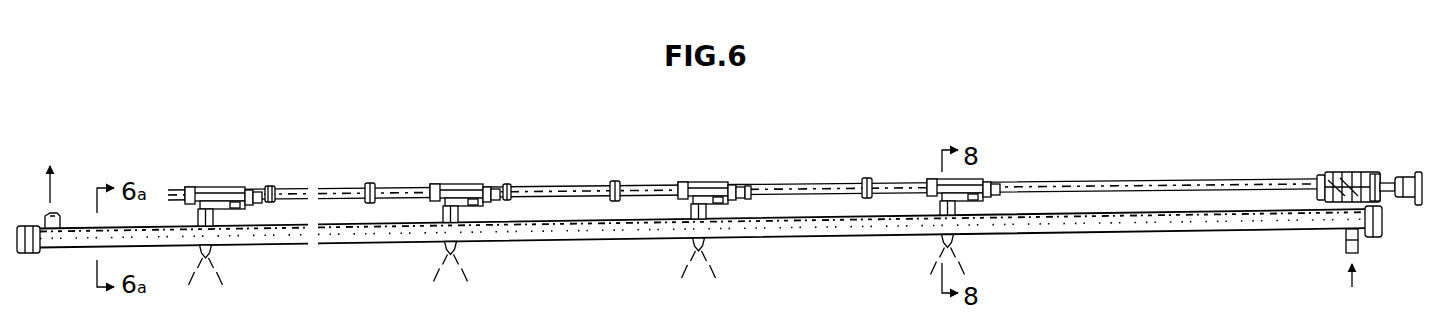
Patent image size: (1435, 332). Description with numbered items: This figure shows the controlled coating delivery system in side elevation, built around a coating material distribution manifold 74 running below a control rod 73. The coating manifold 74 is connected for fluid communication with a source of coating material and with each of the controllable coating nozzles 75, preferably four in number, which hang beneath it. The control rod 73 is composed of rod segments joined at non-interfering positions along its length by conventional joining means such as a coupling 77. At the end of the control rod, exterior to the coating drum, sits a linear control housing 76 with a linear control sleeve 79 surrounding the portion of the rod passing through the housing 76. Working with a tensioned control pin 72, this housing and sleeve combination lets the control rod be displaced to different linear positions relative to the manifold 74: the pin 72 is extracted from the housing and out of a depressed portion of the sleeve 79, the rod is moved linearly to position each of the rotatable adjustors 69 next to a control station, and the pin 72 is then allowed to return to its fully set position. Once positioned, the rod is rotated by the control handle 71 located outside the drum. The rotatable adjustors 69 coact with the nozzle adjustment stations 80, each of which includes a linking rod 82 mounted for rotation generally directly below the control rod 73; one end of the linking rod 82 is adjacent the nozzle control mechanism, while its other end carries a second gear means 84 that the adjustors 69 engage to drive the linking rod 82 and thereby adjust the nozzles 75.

The rotatable adjustor 69 is at (271, 187).
The control handle 71 is at (1420, 205).
The control pin 72 is at (1328, 173).
The control rod 73 is at (1095, 182).
The coating material distribution manifold 74 is at (1135, 229).
The controllable coating nozzle 75 is at (212, 251).
The linear control housing 76 is at (1349, 149).
The coupling 77 is at (616, 182).
The linear control sleeve 79 is at (1374, 173).
The nozzle adjustment station 80 is at (220, 181).
The linking rod 82 is at (712, 206).
The second gear means 84 is at (494, 207).